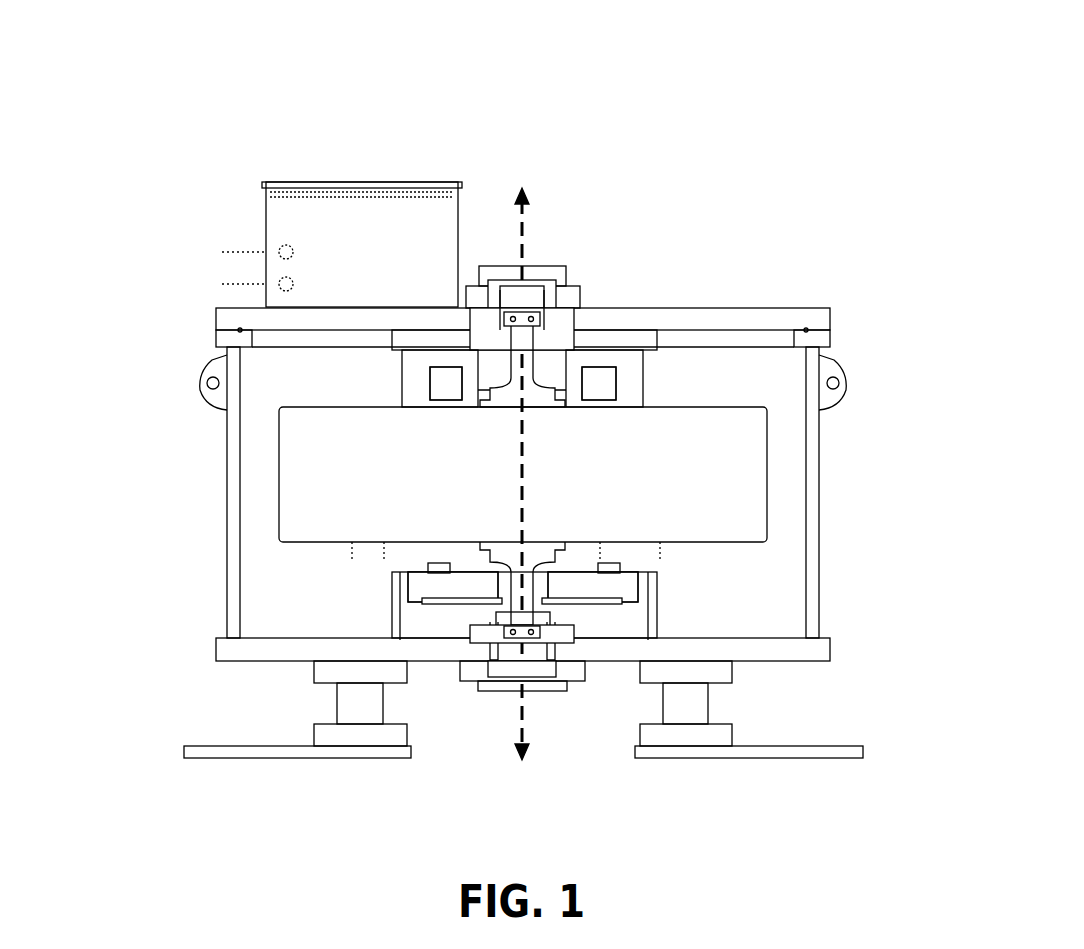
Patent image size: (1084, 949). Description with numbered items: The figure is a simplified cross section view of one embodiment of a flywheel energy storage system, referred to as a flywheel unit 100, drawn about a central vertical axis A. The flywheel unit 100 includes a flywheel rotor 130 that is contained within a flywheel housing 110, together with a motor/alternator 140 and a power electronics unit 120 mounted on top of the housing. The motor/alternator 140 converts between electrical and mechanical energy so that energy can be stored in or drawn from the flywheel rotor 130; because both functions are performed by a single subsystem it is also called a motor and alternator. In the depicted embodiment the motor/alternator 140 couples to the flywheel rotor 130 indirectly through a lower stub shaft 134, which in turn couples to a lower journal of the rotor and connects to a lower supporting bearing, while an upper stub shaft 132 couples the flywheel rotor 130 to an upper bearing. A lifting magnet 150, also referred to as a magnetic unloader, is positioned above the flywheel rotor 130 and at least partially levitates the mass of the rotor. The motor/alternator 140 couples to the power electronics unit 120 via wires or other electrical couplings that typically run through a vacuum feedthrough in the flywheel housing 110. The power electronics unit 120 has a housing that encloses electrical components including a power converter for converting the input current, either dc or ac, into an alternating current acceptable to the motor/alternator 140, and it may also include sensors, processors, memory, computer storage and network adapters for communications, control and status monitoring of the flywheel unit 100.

The flywheel unit 100 is at (636, 57).
The flywheel housing 110 is at (226, 471).
The power electronics unit 120 is at (263, 214).
The flywheel rotor 130 is at (761, 468).
The upper stub shaft 132 is at (532, 362).
The lower stub shaft 134 is at (530, 598).
The motor/alternator 140 is at (386, 602).
The lifting magnet 150 is at (624, 384).
The Axis A is at (536, 236).